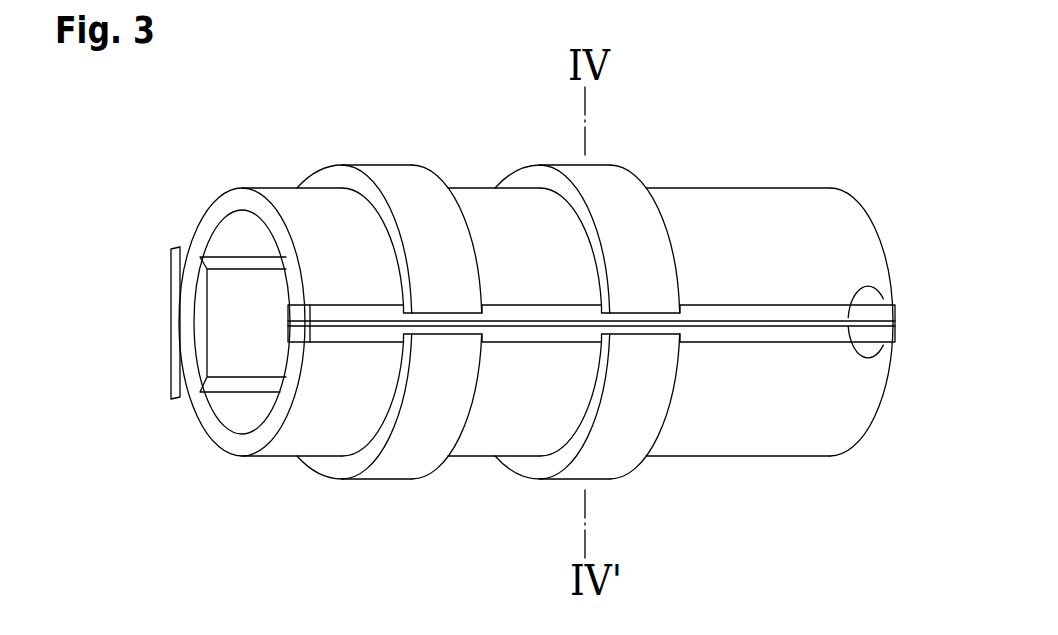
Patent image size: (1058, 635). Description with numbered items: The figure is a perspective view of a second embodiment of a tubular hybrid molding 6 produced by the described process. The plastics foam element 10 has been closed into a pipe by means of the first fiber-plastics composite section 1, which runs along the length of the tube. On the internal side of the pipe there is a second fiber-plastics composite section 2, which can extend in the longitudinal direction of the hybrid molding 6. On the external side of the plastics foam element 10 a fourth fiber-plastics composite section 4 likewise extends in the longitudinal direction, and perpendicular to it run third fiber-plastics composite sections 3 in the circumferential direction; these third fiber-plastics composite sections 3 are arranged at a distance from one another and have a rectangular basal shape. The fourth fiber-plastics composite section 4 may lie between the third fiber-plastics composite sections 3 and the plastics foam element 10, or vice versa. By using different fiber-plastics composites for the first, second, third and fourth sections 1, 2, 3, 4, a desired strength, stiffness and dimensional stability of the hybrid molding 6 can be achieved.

The first fiber-plastics composite section 1 is at (885, 287).
The second fiber-plastics composite section 2 is at (190, 357).
The third fiber-plastics composite sections 3 is at (386, 182).
The fourth fiber-plastics composite section 4 is at (172, 290).
The hybrid molding 6 is at (142, 186).
The plastics foam element 10 is at (301, 212).